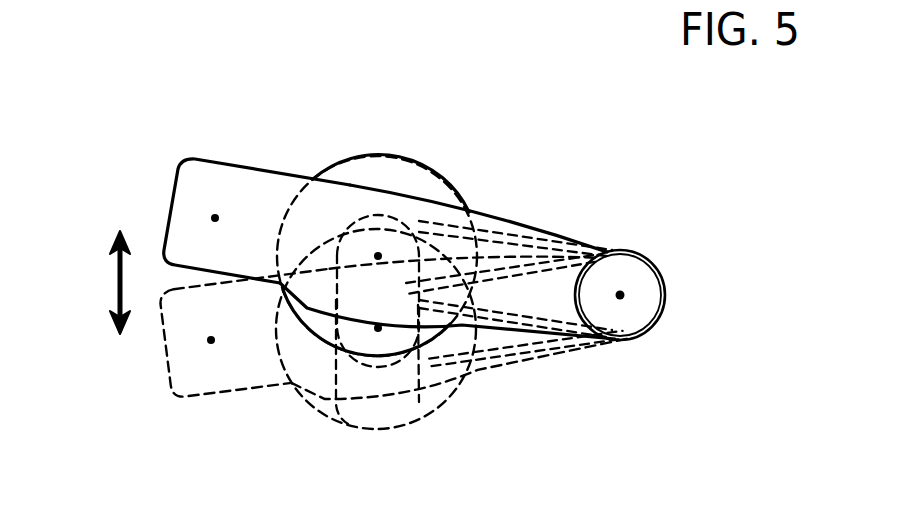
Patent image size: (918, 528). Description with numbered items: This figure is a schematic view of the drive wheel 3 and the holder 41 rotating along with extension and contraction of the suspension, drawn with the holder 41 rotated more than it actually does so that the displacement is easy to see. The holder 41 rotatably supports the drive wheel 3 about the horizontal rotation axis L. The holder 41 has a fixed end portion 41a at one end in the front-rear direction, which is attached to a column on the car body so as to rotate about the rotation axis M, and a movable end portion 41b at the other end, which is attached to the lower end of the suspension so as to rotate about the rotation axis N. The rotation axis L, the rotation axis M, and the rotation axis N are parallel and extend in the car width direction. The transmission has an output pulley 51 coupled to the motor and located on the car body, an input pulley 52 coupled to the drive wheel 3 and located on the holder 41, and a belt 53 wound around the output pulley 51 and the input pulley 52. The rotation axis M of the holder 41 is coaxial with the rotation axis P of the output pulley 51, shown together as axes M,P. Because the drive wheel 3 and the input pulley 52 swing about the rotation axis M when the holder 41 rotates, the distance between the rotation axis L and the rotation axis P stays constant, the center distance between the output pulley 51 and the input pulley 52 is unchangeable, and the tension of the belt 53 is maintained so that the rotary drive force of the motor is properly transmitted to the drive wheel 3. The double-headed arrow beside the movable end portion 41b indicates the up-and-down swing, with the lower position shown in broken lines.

The drive wheel 3 is at (378, 152).
The holder 41 is at (388, 280).
The fixed end portion 41a is at (661, 315).
The movable end portion 41b is at (175, 180).
The output pulley 51 is at (578, 343).
The input pulley 52 is at (350, 220).
The belt 53 is at (494, 228).
The rotation axis L is at (381, 253).
The rotation axis N is at (212, 217).
The rotation axis M and rotation axis P M,P is at (621, 300).